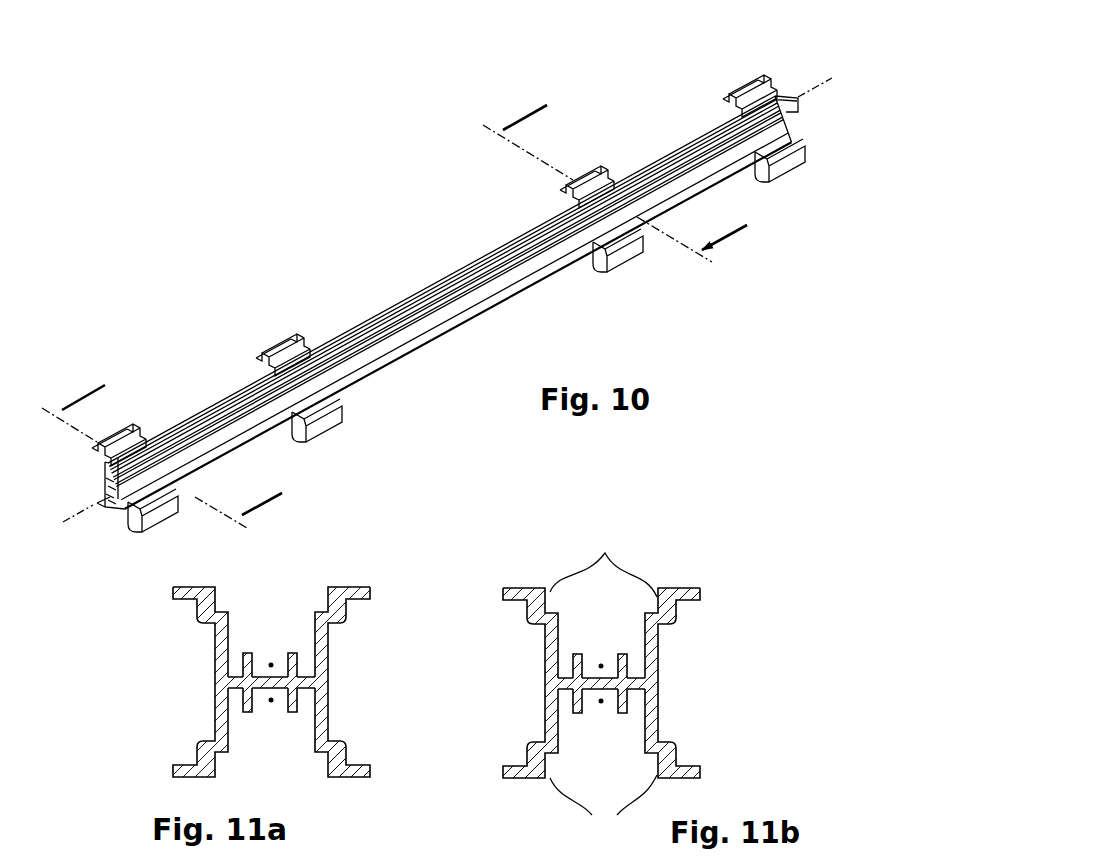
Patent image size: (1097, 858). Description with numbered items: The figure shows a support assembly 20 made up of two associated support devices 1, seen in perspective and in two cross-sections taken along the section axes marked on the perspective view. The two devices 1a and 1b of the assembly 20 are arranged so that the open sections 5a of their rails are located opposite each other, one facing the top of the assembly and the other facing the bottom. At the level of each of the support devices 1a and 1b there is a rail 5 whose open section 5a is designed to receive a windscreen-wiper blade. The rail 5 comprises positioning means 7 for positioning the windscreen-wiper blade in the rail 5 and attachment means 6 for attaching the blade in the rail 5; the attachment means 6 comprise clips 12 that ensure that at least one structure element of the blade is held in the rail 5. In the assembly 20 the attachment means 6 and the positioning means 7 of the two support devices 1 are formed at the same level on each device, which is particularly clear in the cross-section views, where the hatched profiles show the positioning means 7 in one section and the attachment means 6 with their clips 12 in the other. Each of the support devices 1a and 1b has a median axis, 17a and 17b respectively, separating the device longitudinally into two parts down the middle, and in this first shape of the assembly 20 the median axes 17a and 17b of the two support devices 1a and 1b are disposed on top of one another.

In FIG. 10, the support device 1 is at (510, 301).
In FIG. 11A, the first support device 1a is at (210, 659).
In FIG. 11B, the first support device 1a is at (635, 635).
In FIG. 11A, the second support device 1b is at (212, 724).
In FIG. 11B, the second support device 1b is at (631, 731).
In FIG. 10, the rail 5 is at (698, 132).
In FIG. 10, the open section 5a is at (776, 91).
In FIG. 10, the attachment means 6 is at (598, 216).
In FIG. 11B, the attachment means 6 is at (623, 683).
In FIG. 10, the positioning means 7 is at (165, 462).
In FIG. 11A, the positioning means 7 is at (183, 607).
In FIG. 11B, the clips 12 is at (603, 683).
In FIG. 10, the median axis of the first support device 17a is at (73, 505).
In FIG. 11A, the median axis of the first support device 17a is at (270, 650).
In FIG. 11B, the median axis of the first support device 17a is at (600, 651).
In FIG. 10, the median axis of the second support device 17b is at (76, 527).
In FIG. 11A, the median axis of the second support device 17b is at (270, 718).
In FIG. 11B, the median axis of the second support device 17b is at (600, 719).
In FIG. 10, the support assembly 20 is at (414, 382).
In FIG. 11A, the support assembly 20 is at (160, 688).
In FIG. 11B, the support assembly 20 is at (650, 683).